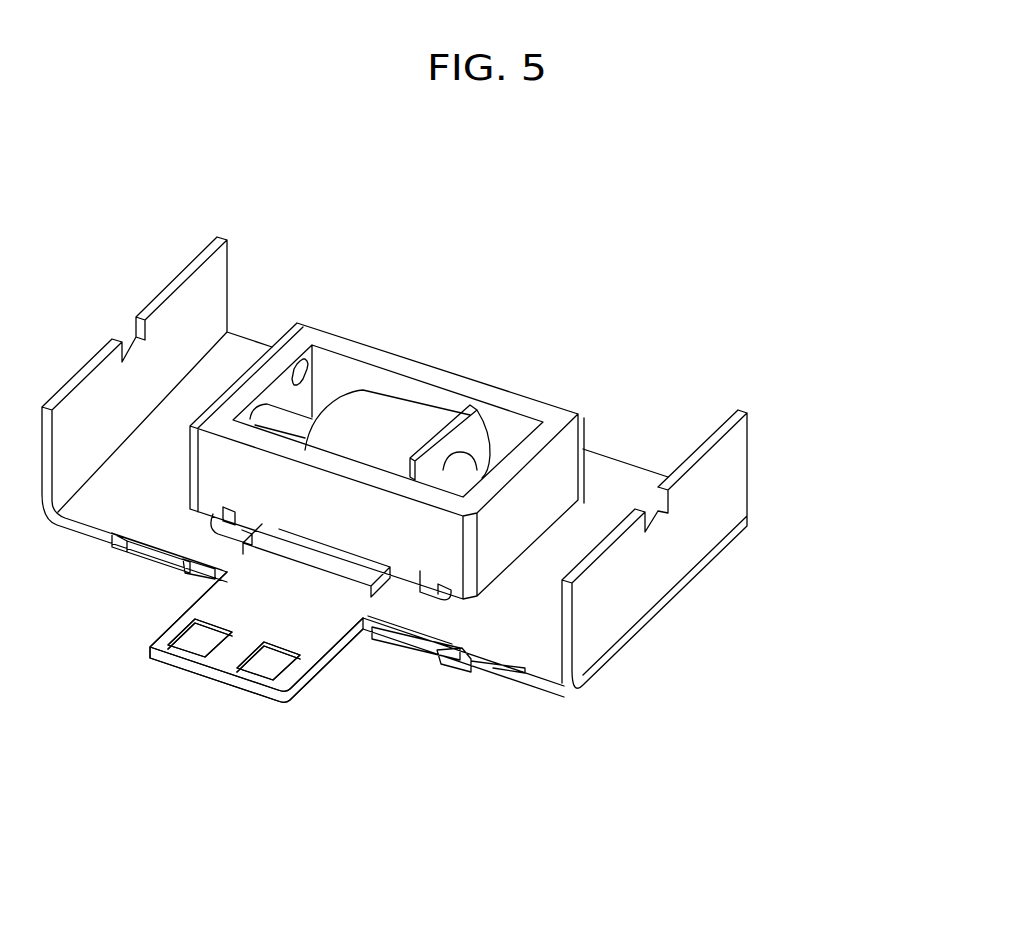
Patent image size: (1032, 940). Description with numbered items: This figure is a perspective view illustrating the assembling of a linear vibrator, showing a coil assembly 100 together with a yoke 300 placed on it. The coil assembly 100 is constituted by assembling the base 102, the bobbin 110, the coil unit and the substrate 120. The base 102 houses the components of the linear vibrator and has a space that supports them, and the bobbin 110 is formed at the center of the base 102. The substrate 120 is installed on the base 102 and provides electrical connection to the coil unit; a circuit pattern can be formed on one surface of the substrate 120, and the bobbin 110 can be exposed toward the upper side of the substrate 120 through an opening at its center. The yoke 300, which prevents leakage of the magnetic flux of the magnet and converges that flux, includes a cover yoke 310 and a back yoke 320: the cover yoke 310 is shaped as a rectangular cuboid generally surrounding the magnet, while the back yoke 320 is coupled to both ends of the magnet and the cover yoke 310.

The coil assembly 100 is at (478, 469).
The base 102 is at (752, 428).
The bobbin 110 is at (374, 372).
The substrate 120 is at (218, 670).
The yoke 300 is at (465, 297).
The cover yoke 310 is at (442, 372).
The back yoke 320 is at (575, 415).